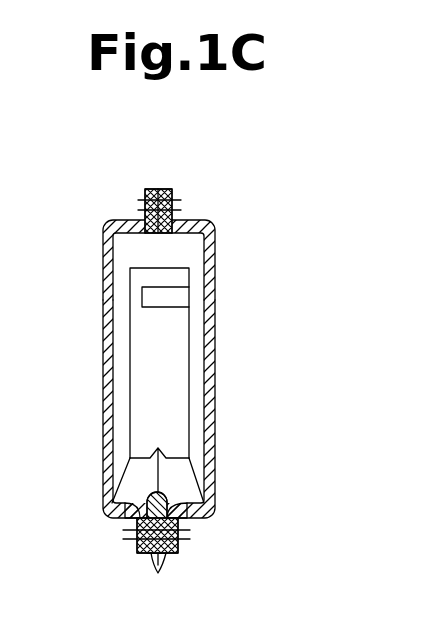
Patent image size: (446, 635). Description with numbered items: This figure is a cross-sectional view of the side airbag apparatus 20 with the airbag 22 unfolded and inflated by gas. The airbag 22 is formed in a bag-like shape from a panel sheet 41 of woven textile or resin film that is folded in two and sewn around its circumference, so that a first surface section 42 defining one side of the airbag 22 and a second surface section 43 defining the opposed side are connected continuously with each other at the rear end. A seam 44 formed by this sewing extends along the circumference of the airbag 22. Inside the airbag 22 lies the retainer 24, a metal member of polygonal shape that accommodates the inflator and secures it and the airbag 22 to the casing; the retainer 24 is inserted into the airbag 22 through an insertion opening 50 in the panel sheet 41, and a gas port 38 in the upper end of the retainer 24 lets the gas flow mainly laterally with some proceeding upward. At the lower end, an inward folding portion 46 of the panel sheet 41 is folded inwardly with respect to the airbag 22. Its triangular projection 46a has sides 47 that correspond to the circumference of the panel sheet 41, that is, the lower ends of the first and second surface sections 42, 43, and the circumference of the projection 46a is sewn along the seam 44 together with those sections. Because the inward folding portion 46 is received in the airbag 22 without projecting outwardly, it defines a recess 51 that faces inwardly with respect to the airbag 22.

The side airbag apparatus 20 is at (163, 362).
The airbag 22 is at (213, 231).
The retainer 24 is at (190, 277).
The gas port 38 is at (171, 292).
The panel sheet 41 is at (102, 241).
The first surface section 42 is at (214, 378).
The second surface section 43 is at (101, 361).
The seam 44 is at (173, 201).
The inward folding portion 46 is at (137, 519).
The projection 46a is at (135, 481).
The sides of the projection 47 is at (155, 581).
The insertion opening 50 is at (180, 453).
The recess 51 is at (180, 488).